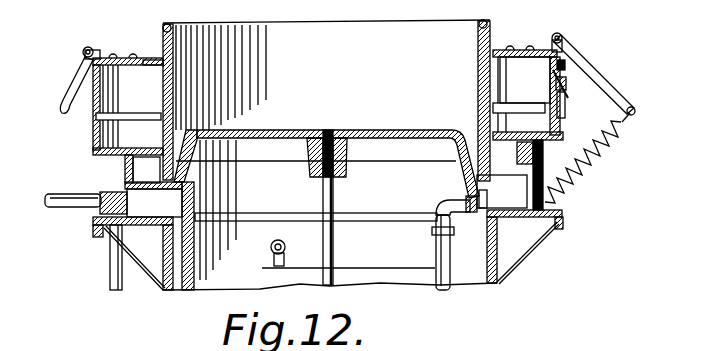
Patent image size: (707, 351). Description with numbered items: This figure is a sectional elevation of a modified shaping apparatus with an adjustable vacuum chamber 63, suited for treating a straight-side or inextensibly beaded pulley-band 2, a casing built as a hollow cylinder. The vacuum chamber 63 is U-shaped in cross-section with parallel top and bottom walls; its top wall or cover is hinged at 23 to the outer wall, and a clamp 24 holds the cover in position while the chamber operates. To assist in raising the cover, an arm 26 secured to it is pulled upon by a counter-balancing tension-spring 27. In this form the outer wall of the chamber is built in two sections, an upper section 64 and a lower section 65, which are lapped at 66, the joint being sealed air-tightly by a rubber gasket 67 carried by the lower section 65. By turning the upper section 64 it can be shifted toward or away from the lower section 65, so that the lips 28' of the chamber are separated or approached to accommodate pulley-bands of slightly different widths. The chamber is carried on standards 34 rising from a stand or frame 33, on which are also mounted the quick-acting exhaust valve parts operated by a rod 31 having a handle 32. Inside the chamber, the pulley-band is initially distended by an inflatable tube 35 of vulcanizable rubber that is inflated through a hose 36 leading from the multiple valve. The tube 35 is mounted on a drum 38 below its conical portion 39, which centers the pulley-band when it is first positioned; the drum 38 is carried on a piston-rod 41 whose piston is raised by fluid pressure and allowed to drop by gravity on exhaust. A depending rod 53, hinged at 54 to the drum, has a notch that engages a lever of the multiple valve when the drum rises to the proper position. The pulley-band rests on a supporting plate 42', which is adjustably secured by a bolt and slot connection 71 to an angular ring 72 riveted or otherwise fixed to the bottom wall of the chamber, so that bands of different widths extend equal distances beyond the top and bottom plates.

The straight-side pulley-band 2 is at (164, 34).
The hinge 23 is at (560, 33).
The clamp 24 is at (63, 98).
The arm 26 is at (626, 101).
The counter-balancing tension-spring 27 is at (598, 152).
The lips of the vacuum chamber 28' is at (525, 80).
The rod 31 is at (110, 250).
The handle 32 is at (46, 200).
The stand or frame 33 is at (146, 262).
The standards 34 is at (557, 204).
The inflatable tube 35 is at (182, 205).
The hose 36 is at (436, 258).
The drum 38 is at (385, 130).
The conical portion 39 is at (470, 130).
The piston-rod 41 is at (334, 262).
The supporting plate 42' is at (502, 191).
The rod 53 is at (273, 262).
The hinge 54 is at (285, 249).
The vacuum chamber 63 is at (522, 65).
The upper section 64 is at (565, 68).
The lower section 65 is at (566, 112).
The lap joint 66 is at (566, 98).
The rubber gasket 67 is at (570, 92).
The bolt and slot connection 71 is at (543, 163).
The angular ring 72 is at (562, 137).